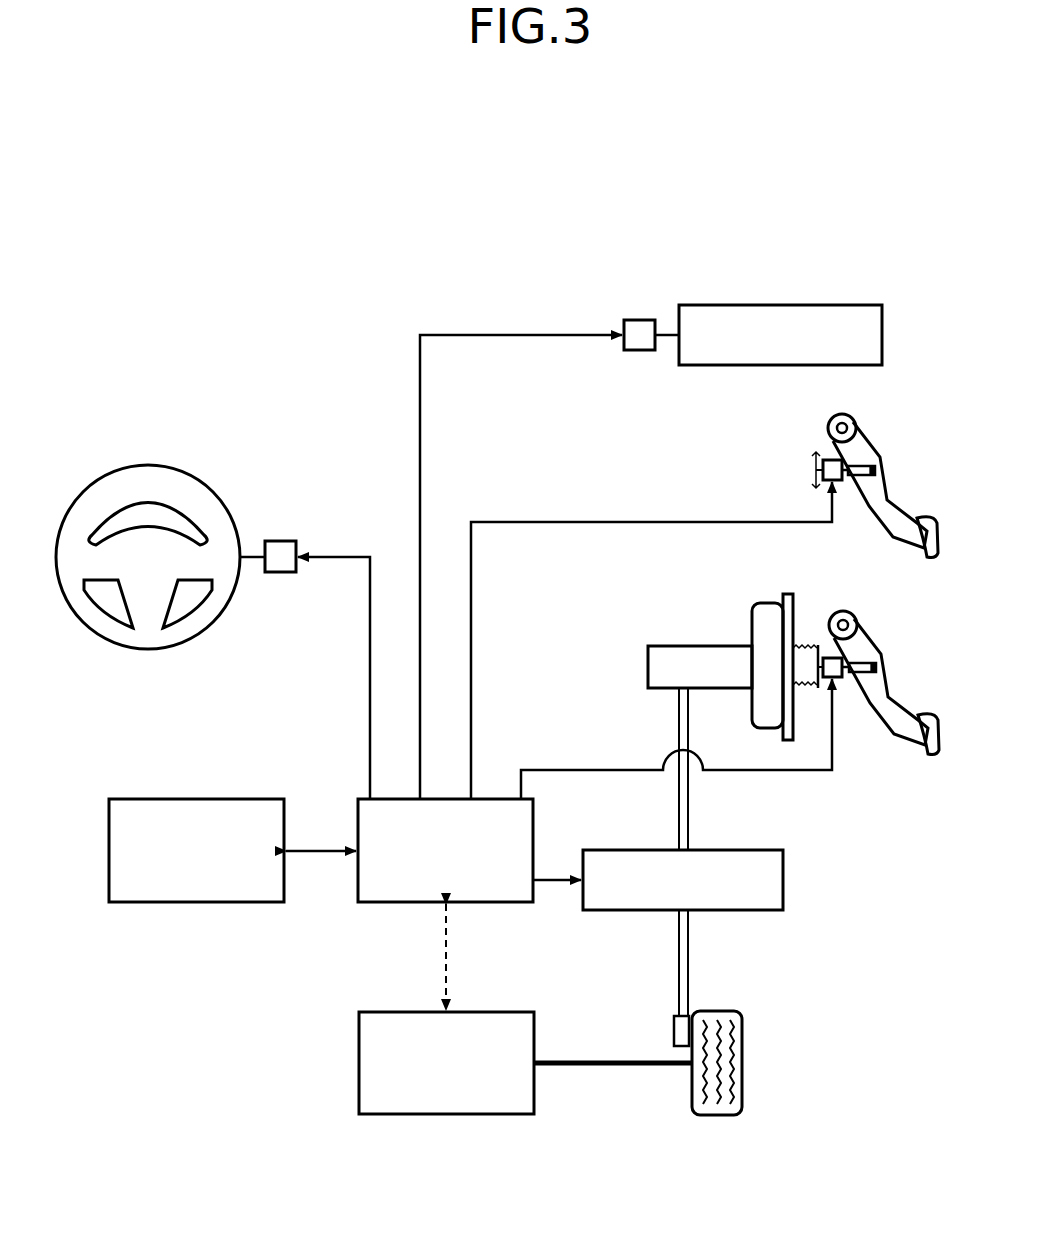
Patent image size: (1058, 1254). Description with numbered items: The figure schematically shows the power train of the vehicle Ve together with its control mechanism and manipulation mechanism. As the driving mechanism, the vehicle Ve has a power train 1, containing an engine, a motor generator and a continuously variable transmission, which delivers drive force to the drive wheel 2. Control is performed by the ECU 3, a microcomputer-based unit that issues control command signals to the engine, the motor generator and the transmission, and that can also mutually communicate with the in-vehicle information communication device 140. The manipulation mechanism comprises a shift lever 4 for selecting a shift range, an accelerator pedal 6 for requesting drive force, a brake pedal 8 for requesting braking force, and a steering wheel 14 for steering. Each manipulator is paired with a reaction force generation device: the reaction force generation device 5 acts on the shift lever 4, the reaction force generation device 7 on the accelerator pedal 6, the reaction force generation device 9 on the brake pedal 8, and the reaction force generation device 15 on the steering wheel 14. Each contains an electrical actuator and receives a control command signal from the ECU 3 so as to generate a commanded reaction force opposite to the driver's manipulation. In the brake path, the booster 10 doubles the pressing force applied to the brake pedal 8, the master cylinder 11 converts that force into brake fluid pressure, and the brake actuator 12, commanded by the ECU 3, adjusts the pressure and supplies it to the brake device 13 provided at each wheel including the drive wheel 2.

The power train 1 is at (447, 1116).
The drive wheel 2 is at (718, 1116).
The Electronic Control Unit (ECU) 3 is at (533, 812).
The shift lever 4 is at (778, 305).
The reaction force generation device 5 is at (638, 320).
The accelerator pedal 6 is at (884, 466).
The reaction force generation device 7 is at (829, 460).
The brake pedal 8 is at (885, 663).
The reaction force generation device 9 is at (832, 658).
The booster 10 is at (766, 603).
The master cylinder 11 is at (691, 646).
The brake actuator 12 is at (783, 878).
The brake device 13 is at (674, 1034).
The steering wheel 14 is at (146, 465).
The reaction force generation device 15 is at (279, 541).
The in-vehicle information communication device 140 is at (193, 799).
The vehicle Ve is at (822, 208).